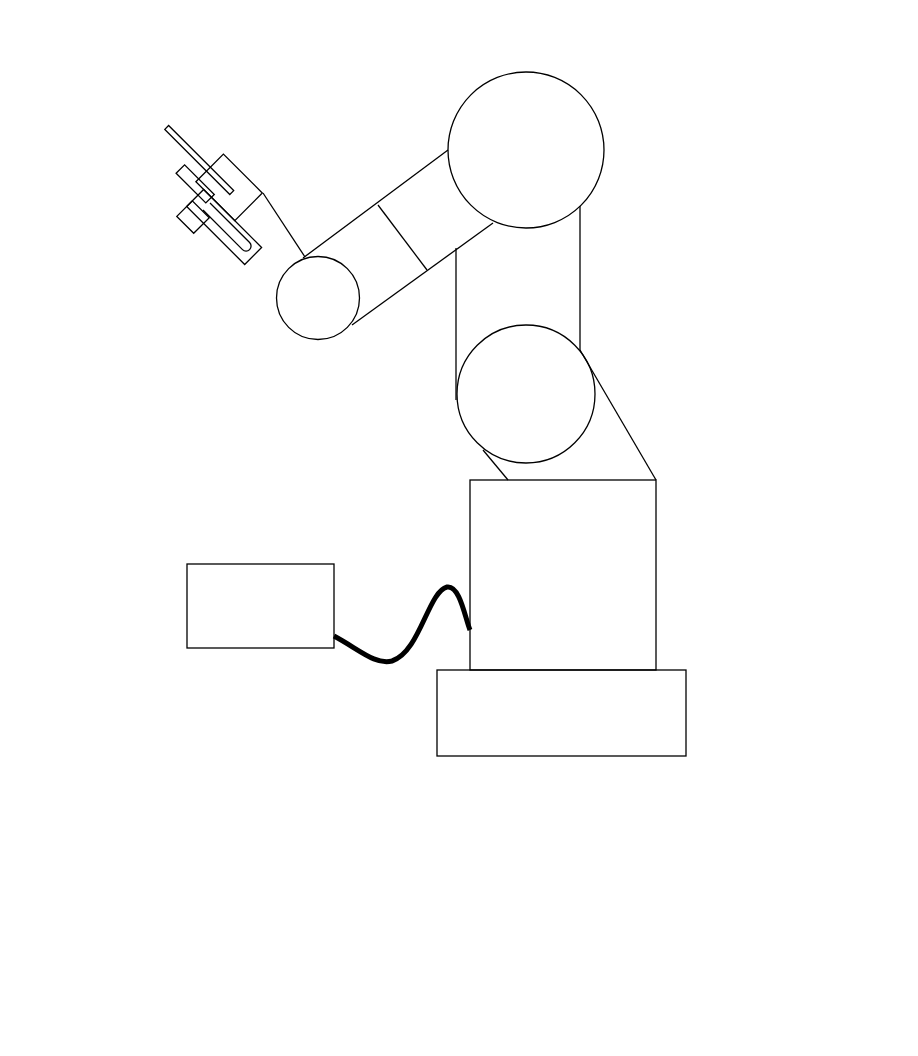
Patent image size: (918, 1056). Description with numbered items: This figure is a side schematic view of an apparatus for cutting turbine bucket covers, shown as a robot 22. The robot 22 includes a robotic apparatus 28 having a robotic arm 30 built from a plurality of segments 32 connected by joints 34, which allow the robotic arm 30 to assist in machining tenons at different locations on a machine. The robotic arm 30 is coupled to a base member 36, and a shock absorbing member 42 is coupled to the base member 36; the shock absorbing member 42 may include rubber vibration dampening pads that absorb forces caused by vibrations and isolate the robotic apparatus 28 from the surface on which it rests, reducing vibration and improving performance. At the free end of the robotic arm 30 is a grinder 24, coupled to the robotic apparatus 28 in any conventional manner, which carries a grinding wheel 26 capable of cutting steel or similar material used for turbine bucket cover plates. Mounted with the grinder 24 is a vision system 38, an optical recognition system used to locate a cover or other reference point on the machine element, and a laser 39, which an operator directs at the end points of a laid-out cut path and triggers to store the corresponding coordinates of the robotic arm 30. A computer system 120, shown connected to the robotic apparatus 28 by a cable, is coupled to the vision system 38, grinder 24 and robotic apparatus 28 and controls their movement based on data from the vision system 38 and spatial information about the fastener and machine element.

The robot 22 is at (145, 140).
The grinder 24 is at (250, 262).
The grinding wheel 26 is at (212, 198).
The robotic apparatus 28 is at (720, 392).
The robotic arm 30 is at (418, 348).
The segments 32 is at (417, 190).
The joints 34 is at (303, 320).
The base member 36 is at (638, 537).
The vision system 38 is at (235, 177).
The laser 39 is at (187, 140).
The shock absorbing member 42 is at (664, 713).
The computer system 120 is at (236, 621).